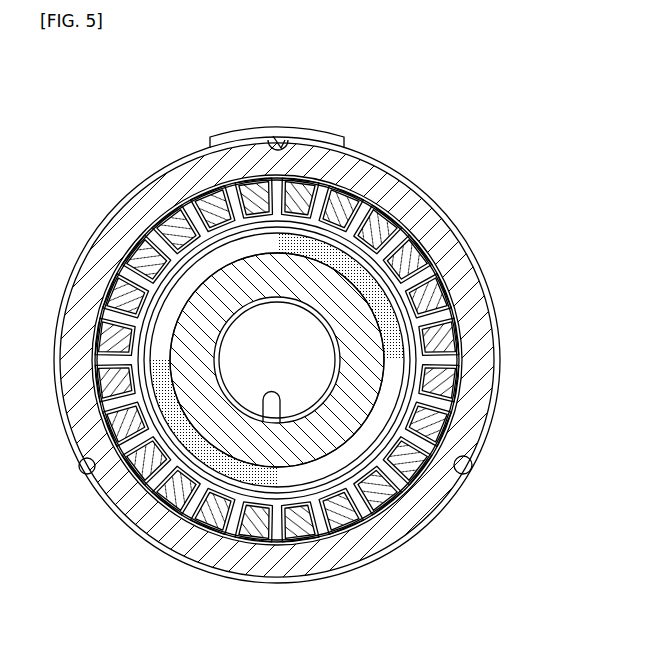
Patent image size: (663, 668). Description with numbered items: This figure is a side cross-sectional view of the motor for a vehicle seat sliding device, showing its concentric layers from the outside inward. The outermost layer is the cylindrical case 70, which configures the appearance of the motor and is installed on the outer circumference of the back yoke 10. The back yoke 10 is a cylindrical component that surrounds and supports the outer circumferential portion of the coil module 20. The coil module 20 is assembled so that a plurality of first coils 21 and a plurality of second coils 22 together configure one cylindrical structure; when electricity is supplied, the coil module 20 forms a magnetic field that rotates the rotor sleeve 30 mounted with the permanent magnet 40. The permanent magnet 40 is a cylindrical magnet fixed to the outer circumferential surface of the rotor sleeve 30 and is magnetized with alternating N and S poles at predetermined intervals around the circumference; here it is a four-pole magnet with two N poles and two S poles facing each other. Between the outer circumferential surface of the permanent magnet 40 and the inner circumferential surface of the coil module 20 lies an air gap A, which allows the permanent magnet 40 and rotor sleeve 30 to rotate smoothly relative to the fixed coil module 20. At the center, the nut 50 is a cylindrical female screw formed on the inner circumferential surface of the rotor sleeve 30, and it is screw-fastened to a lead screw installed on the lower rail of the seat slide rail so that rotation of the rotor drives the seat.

The back yoke 10 is at (378, 166).
The cylindrical case 70 is at (150, 167).
The permanent magnet 40 is at (483, 445).
The air gap A is at (452, 378).
The coil module 20 is at (573, 290).
The first coils 21 is at (455, 287).
The second coils 22 is at (452, 333).
The rotor sleeve 30 is at (281, 425).
The nut 50 is at (263, 400).